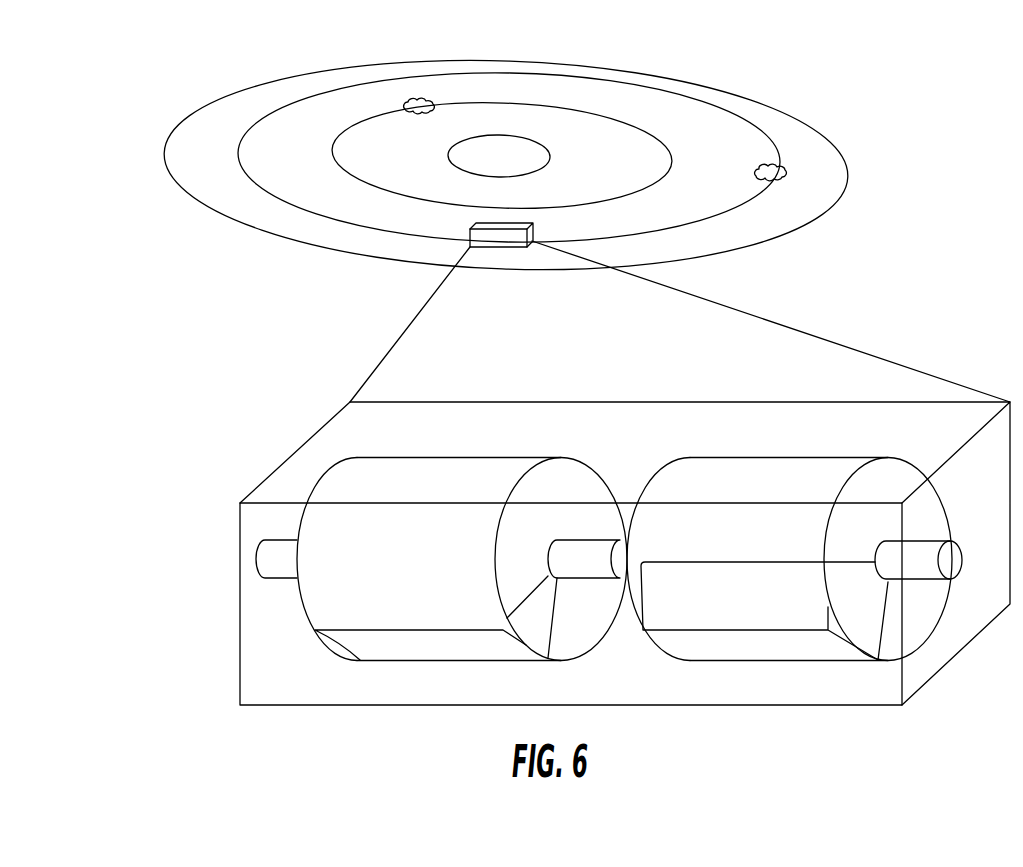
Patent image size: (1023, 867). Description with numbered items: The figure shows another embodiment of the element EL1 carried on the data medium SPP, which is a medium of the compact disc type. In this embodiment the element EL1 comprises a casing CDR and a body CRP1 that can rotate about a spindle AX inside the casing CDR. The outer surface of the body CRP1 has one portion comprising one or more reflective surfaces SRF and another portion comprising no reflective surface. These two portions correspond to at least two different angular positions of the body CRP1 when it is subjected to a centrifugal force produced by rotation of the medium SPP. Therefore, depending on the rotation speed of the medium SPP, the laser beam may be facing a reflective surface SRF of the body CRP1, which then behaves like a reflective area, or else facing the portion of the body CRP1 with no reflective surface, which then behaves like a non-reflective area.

The data medium SPP is at (749, 98).
The element EL1 is at (568, 337).
The casing CDR is at (980, 402).
The body CRP1 is at (340, 520).
The spindle AX is at (270, 560).
The reflective surface SRF is at (596, 612).